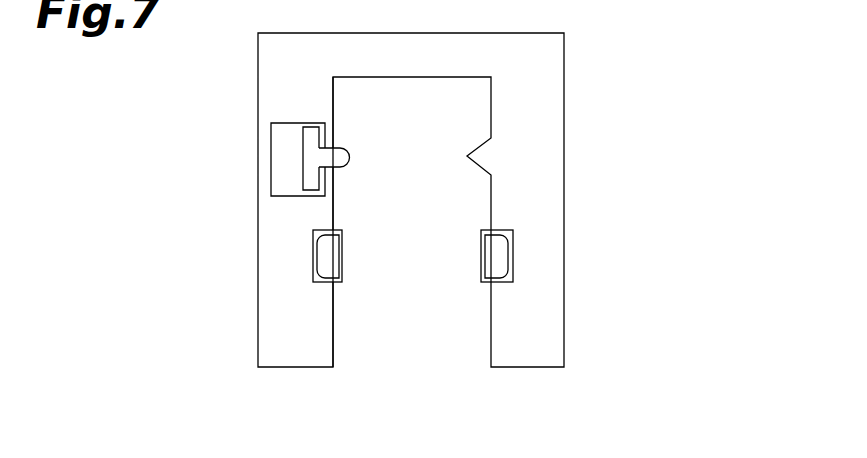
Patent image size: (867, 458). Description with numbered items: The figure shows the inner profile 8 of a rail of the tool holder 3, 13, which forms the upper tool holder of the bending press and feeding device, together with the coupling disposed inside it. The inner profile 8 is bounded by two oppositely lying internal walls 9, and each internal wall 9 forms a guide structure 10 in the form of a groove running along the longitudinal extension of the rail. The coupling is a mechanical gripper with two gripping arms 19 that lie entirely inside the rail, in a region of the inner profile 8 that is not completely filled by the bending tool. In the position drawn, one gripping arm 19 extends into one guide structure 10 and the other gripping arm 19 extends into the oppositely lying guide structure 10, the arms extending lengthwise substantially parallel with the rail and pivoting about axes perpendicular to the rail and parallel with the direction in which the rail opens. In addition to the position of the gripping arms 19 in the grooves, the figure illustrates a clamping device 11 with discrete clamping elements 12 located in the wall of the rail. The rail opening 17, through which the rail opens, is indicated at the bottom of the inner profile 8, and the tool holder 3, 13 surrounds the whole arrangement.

The upper tool holder 3 is at (503, 200).
The upper tool holder 13 is at (565, 132).
The inner profile 8 is at (466, 347).
The internal wall 9 is at (337, 342).
The guide structure 10 is at (484, 283).
The clamping device 11 is at (291, 118).
The clamping element 12 is at (345, 147).
The rail opening 17 is at (459, 399).
The gripping arm 19 is at (311, 259).